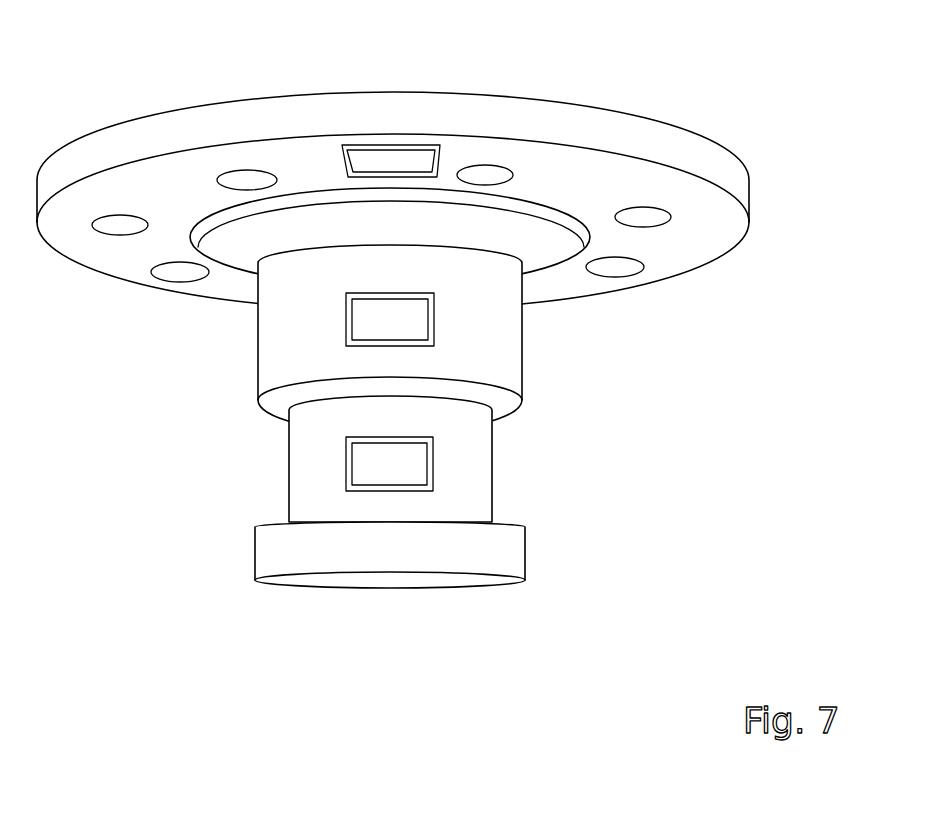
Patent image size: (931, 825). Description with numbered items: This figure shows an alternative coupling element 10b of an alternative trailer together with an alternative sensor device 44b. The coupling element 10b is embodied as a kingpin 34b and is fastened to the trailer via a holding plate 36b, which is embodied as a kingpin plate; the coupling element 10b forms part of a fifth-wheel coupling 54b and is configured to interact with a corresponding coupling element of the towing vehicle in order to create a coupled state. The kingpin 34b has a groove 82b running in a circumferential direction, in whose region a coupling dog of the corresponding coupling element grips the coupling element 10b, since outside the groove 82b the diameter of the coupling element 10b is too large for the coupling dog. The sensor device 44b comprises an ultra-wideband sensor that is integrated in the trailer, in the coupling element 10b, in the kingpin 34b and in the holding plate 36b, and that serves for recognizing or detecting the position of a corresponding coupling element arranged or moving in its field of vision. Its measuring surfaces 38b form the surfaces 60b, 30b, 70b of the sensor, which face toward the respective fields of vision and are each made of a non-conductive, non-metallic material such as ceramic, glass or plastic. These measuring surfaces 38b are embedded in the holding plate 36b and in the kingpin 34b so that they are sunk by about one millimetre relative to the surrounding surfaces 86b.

The holding plate 36b is at (88, 163).
The measuring surfaces 38b is at (474, 339).
The surface of the sensor 60b is at (391, 89).
The surface of the sensor 30b is at (486, 192).
The surface of the sensor 70b is at (403, 556).
The surrounding surfaces 86b is at (79, 231).
The coupling element 10b is at (478, 339).
The kingpin 34b is at (475, 352).
The groove 82b is at (530, 448).
The sensor device 44b is at (643, 420).
The fifth-wheel coupling 54b is at (183, 480).